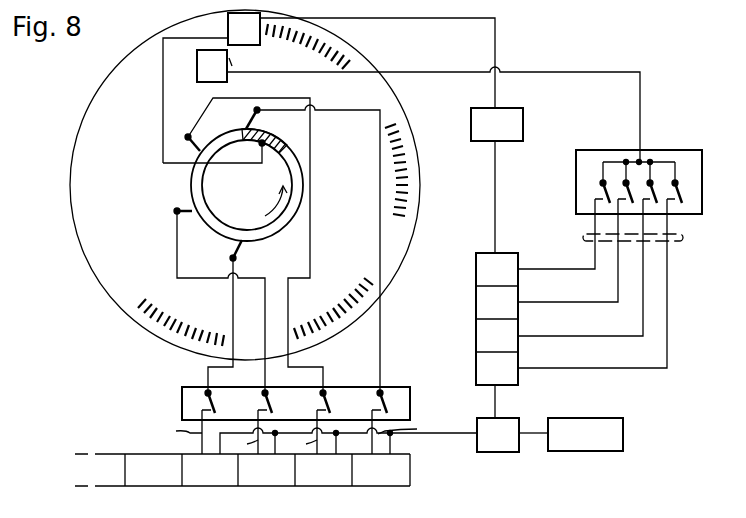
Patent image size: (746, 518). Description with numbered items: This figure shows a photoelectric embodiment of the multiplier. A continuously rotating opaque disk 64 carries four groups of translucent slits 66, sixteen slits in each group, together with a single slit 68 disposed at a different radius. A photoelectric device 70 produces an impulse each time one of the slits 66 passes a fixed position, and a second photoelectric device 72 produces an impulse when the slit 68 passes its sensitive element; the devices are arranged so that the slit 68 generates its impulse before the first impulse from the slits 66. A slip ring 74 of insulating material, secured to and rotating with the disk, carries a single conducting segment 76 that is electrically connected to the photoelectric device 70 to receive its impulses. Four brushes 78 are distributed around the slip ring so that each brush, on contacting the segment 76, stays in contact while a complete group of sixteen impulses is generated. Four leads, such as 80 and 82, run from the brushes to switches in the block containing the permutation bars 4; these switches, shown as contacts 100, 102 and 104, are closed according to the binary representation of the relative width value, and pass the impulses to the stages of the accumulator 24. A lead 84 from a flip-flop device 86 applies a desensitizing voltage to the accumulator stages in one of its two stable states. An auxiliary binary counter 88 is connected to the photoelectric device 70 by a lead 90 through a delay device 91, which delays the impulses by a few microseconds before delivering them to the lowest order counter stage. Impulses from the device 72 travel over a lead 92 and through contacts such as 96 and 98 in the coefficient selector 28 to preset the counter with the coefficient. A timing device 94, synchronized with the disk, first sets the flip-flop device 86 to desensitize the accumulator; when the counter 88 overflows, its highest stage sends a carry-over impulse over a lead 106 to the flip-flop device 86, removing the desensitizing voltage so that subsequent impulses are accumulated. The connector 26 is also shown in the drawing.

The permutation bars 4 is at (182, 404).
The accumulator 24 is at (100, 454).
The connector 26 is at (683, 239).
The coefficient selector 28 is at (683, 148).
The opaque disk 64 is at (84, 147).
The translucent apertures or slits 66 is at (349, 64).
The single slit 68 is at (238, 64).
The photoelectric device 70 is at (214, 88).
The photoelectric device 72 is at (212, 66).
The slip ring 74 is at (191, 193).
The conducting segment 76 is at (271, 138).
The brushes 78 is at (233, 252).
The lead 80 is at (383, 368).
The lead 82 is at (305, 368).
The lead 84 is at (470, 436).
The flip-flop device 86 is at (512, 435).
The auxiliary binary counter 88 is at (474, 272).
The lead 90 is at (497, 50).
The delay device 91 is at (497, 124).
The lead 92 is at (640, 100).
The timing device 94 is at (585, 434).
The contact 96 is at (658, 197).
The contact 98 is at (605, 195).
The contact 100 is at (388, 402).
The contact 102 is at (332, 402).
The contact 104 is at (218, 402).
The lead 106 is at (498, 412).